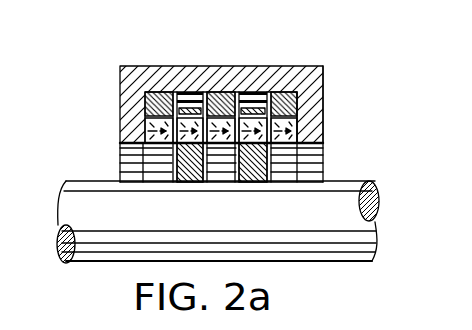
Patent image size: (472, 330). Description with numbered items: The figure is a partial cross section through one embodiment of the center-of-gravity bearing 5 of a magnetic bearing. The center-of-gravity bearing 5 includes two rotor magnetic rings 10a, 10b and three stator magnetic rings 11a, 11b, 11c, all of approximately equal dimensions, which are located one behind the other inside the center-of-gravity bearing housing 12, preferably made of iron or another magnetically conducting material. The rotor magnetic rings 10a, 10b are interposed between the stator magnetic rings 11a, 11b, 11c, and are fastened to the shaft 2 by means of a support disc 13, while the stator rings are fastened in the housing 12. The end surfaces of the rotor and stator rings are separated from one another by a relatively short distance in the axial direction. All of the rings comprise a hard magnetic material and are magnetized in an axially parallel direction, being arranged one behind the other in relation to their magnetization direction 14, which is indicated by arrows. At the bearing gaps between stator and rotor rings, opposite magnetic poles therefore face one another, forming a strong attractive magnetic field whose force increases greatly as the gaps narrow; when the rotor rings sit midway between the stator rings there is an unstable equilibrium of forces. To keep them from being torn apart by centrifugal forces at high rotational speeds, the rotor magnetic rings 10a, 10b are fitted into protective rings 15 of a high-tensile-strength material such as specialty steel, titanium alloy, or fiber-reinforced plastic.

The shaft 2 is at (331, 199).
The center-of-gravity bearing 5 is at (118, 107).
The rotor magnetic ring 10a is at (190, 164).
The rotor magnetic ring 10b is at (250, 165).
The stator magnetic ring 11a is at (158, 98).
The stator magnetic ring 11b is at (231, 100).
The stator magnetic ring 11c is at (284, 100).
The center-of-gravity bearing housing 12 is at (306, 98).
The support disc 13 is at (226, 168).
The magnetization direction 14 is at (148, 136).
The protective ring 15 is at (192, 99).